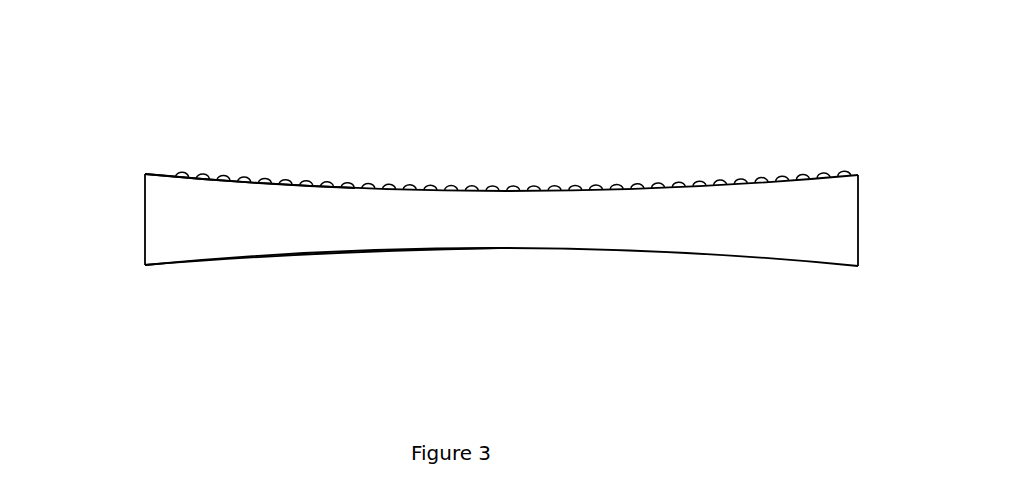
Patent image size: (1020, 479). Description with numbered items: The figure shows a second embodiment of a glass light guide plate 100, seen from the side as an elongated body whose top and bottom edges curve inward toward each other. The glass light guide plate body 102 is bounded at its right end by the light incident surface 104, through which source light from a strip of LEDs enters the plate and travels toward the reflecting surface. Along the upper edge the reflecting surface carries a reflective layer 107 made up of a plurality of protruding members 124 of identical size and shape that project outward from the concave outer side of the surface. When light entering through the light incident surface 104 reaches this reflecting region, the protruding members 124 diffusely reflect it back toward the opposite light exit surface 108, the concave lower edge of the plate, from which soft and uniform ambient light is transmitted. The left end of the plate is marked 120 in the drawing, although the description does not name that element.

The glass light guide plate 100 is at (250, 155).
The glass light guide plate body 102 is at (835, 222).
The light incident surface 104 is at (859, 235).
The reflective layer 107 is at (163, 177).
The light exit surface 108 is at (315, 253).
The light input end surface 120 is at (143, 222).
The protruding members 124 is at (333, 178).